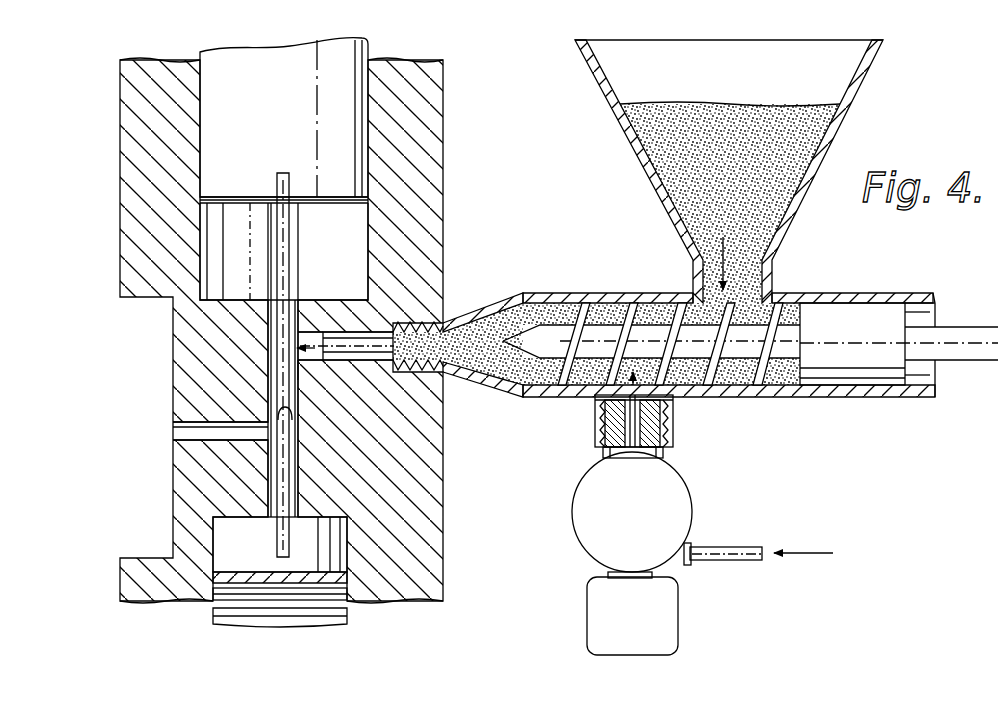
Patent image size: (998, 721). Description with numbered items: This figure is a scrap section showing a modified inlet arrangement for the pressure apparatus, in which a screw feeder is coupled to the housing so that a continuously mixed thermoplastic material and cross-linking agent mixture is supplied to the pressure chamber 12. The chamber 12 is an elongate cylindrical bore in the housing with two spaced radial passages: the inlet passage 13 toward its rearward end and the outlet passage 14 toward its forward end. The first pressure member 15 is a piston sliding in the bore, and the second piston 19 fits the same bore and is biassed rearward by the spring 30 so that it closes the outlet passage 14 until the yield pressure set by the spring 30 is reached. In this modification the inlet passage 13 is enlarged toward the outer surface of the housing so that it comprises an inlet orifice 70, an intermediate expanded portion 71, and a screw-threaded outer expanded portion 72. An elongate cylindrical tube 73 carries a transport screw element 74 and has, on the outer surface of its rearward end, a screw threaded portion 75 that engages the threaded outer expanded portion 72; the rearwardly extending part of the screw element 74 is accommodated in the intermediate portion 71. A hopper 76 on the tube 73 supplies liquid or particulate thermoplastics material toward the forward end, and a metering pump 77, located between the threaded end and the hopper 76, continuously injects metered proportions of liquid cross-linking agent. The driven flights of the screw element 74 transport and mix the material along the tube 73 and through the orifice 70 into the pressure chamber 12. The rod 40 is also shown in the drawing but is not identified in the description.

The pressure chamber 12 is at (284, 399).
The inlet passage 13 is at (372, 331).
The outlet passage 14 is at (178, 433).
The first pressure member 15 is at (256, 208).
The second piston 19 is at (282, 412).
The spring 30 is at (348, 578).
The plunger rod 40 is at (280, 268).
The inlet orifice 70 is at (305, 333).
The intermediate expanded portion 71 is at (308, 373).
The outer expanded portion 72 is at (447, 324).
The elongate cylindrical tube 73 is at (595, 296).
The transport screw element 74 is at (580, 392).
The screw threaded portion 75 is at (435, 373).
The hopper 76 is at (693, 230).
The metering pump 77 is at (680, 492).